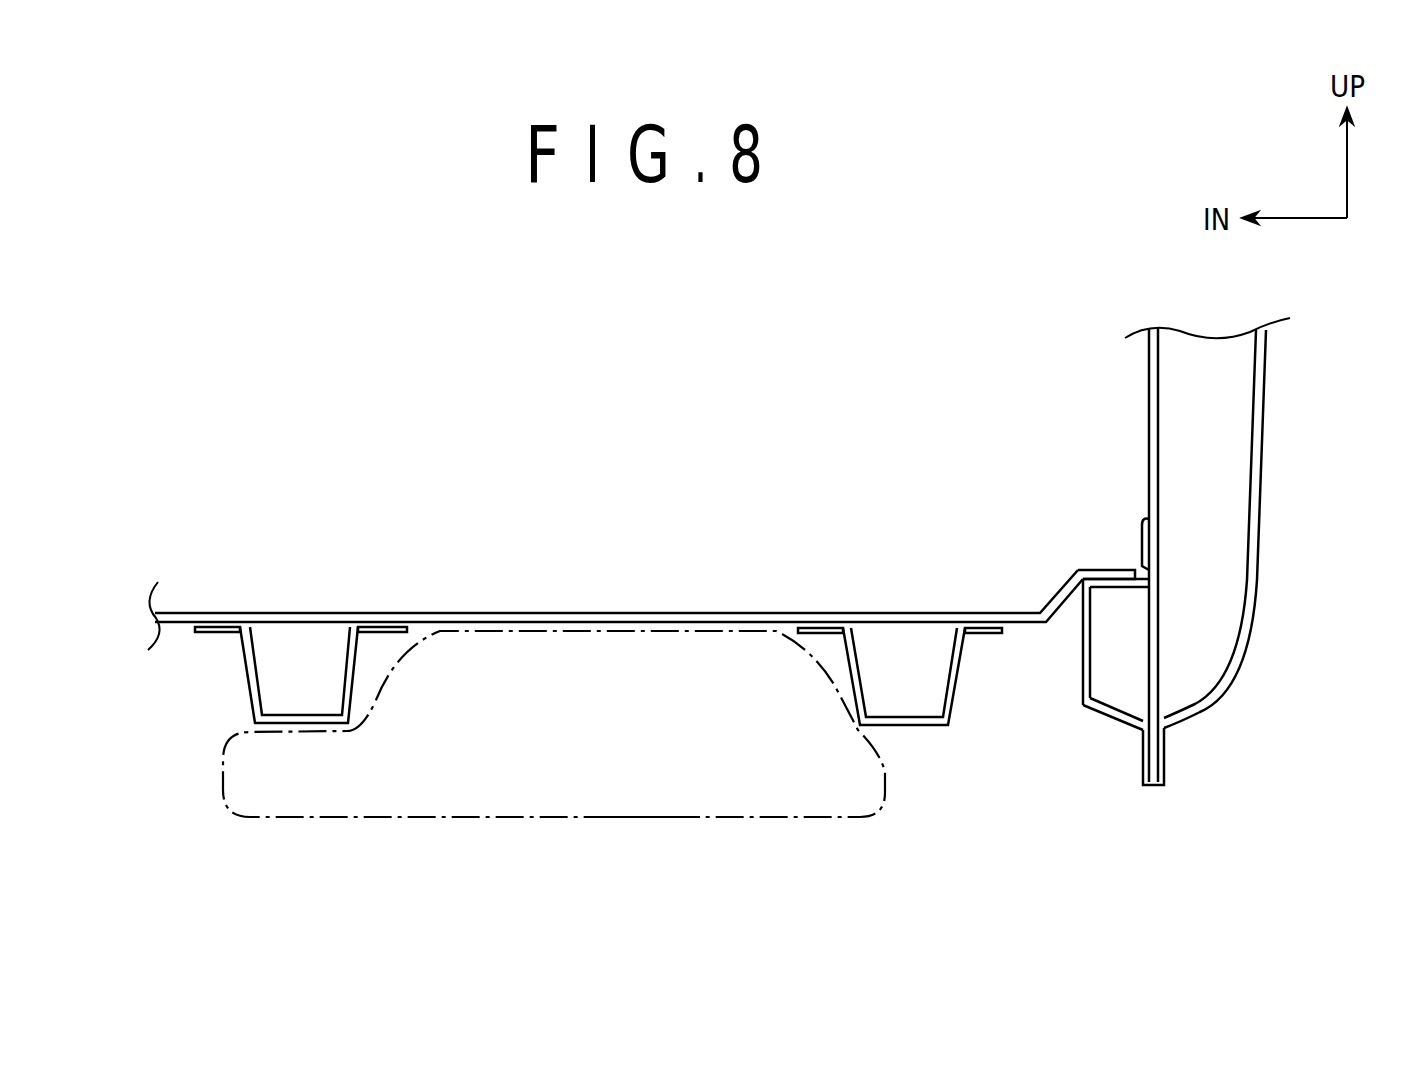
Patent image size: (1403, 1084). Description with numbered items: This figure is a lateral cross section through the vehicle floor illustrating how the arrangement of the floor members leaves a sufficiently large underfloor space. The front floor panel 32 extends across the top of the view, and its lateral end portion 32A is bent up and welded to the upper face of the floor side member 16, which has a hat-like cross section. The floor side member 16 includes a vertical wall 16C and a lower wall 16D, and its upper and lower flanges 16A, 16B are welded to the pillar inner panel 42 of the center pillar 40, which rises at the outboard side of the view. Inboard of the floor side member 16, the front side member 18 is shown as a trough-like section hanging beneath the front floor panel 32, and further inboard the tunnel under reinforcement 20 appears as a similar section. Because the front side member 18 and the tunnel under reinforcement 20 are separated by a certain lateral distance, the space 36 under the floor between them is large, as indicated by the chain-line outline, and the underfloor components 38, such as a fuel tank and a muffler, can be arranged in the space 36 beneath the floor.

The floor side member 16 is at (1096, 660).
The upper flange 16A is at (1142, 535).
The lower flange 16B is at (1140, 772).
The vertical wall 16C is at (1082, 662).
The lower wall 16D is at (1120, 724).
The front side member 18 is at (946, 727).
The tunnel under reinforcement 20 is at (251, 692).
The front floor panel 32 is at (641, 563).
The end portion 32A is at (1110, 568).
The space 36 is at (610, 731).
The underfloor components 38 is at (668, 820).
The center pillar 40 is at (1264, 410).
The pillar inner panel 42 is at (1150, 423).